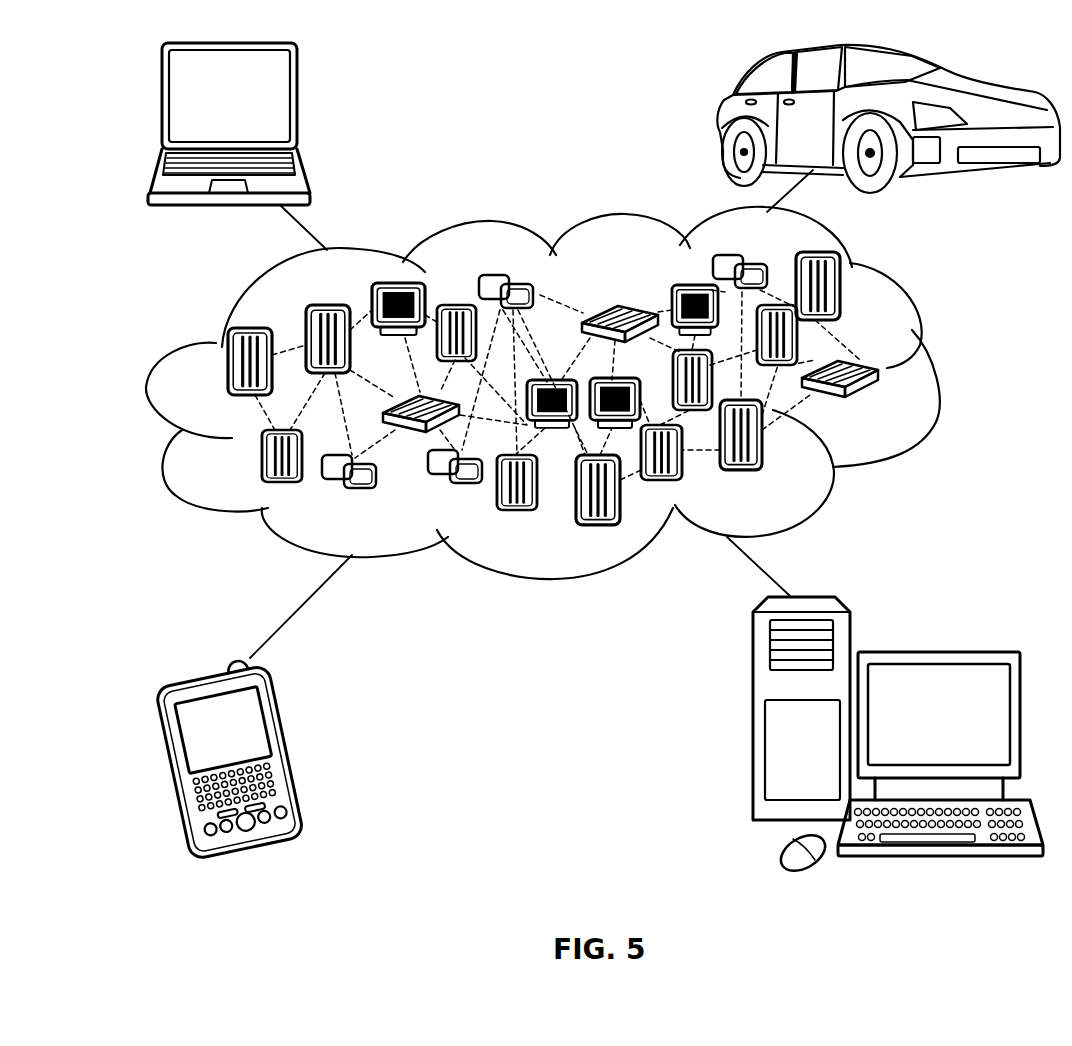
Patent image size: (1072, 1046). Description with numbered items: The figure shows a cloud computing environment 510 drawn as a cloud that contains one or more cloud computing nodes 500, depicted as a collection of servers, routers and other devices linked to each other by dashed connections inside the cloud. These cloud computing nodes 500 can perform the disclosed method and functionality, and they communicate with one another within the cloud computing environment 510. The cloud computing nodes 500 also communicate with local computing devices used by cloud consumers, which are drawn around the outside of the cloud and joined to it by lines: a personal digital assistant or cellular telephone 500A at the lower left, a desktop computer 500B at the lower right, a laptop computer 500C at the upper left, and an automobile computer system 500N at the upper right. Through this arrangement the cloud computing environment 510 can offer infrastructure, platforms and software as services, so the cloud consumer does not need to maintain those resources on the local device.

The cloud computing nodes 500 is at (888, 400).
The cloud computing environment 510 is at (925, 347).
The personal digital assistant (PDA) or cellular telephone 500A is at (287, 742).
The desktop computer 500B is at (932, 650).
The laptop computer 500C is at (297, 103).
The automobile computer system 500N is at (718, 122).